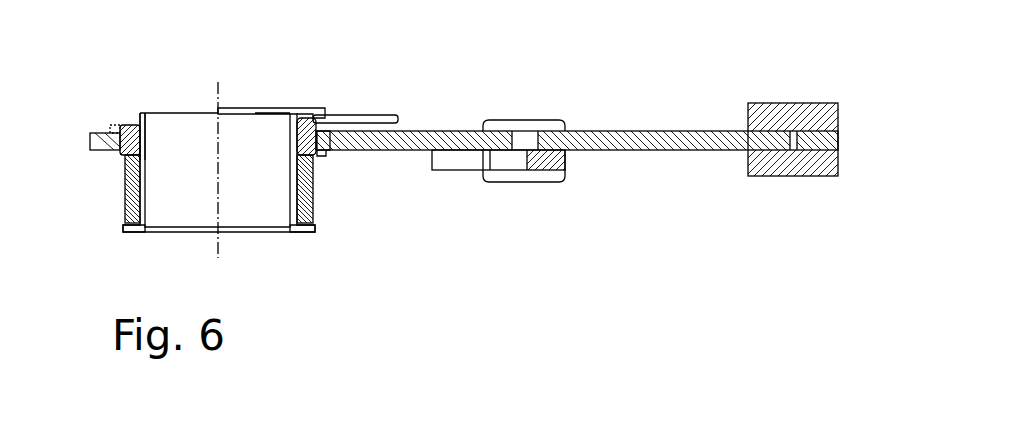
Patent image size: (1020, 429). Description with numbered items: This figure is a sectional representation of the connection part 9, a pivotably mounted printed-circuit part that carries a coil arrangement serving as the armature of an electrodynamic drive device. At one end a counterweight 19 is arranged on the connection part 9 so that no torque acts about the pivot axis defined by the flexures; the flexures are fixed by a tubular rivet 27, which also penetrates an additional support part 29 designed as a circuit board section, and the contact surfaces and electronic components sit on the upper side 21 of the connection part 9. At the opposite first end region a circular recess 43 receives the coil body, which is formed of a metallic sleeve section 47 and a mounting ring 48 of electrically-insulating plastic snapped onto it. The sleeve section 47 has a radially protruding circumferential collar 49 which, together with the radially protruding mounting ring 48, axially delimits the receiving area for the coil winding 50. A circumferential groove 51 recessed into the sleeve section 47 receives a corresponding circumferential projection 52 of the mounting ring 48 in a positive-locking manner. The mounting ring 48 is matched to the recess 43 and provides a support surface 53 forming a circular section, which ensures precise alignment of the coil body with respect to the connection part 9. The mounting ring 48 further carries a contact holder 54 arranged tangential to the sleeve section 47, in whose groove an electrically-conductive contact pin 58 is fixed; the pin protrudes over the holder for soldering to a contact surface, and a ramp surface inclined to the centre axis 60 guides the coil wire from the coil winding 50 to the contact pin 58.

The connection part 9 is at (724, 94).
The counterweight 19 is at (817, 117).
The upper side 21 is at (643, 130).
The tubular rivet 27 is at (522, 127).
The support part 29 is at (465, 160).
The circular recess 43 is at (323, 138).
The sleeve section 47 is at (293, 192).
The mounting ring 48 is at (130, 128).
The circumferential collar 49 is at (128, 230).
The coil winding 50 is at (127, 207).
The circumferential groove 51 is at (140, 140).
The circumferential projection 52 is at (307, 130).
The support surface 53 is at (122, 148).
The contact holder 54 is at (268, 95).
The contact pin 58 is at (375, 117).
The centre axis 60 is at (218, 100).